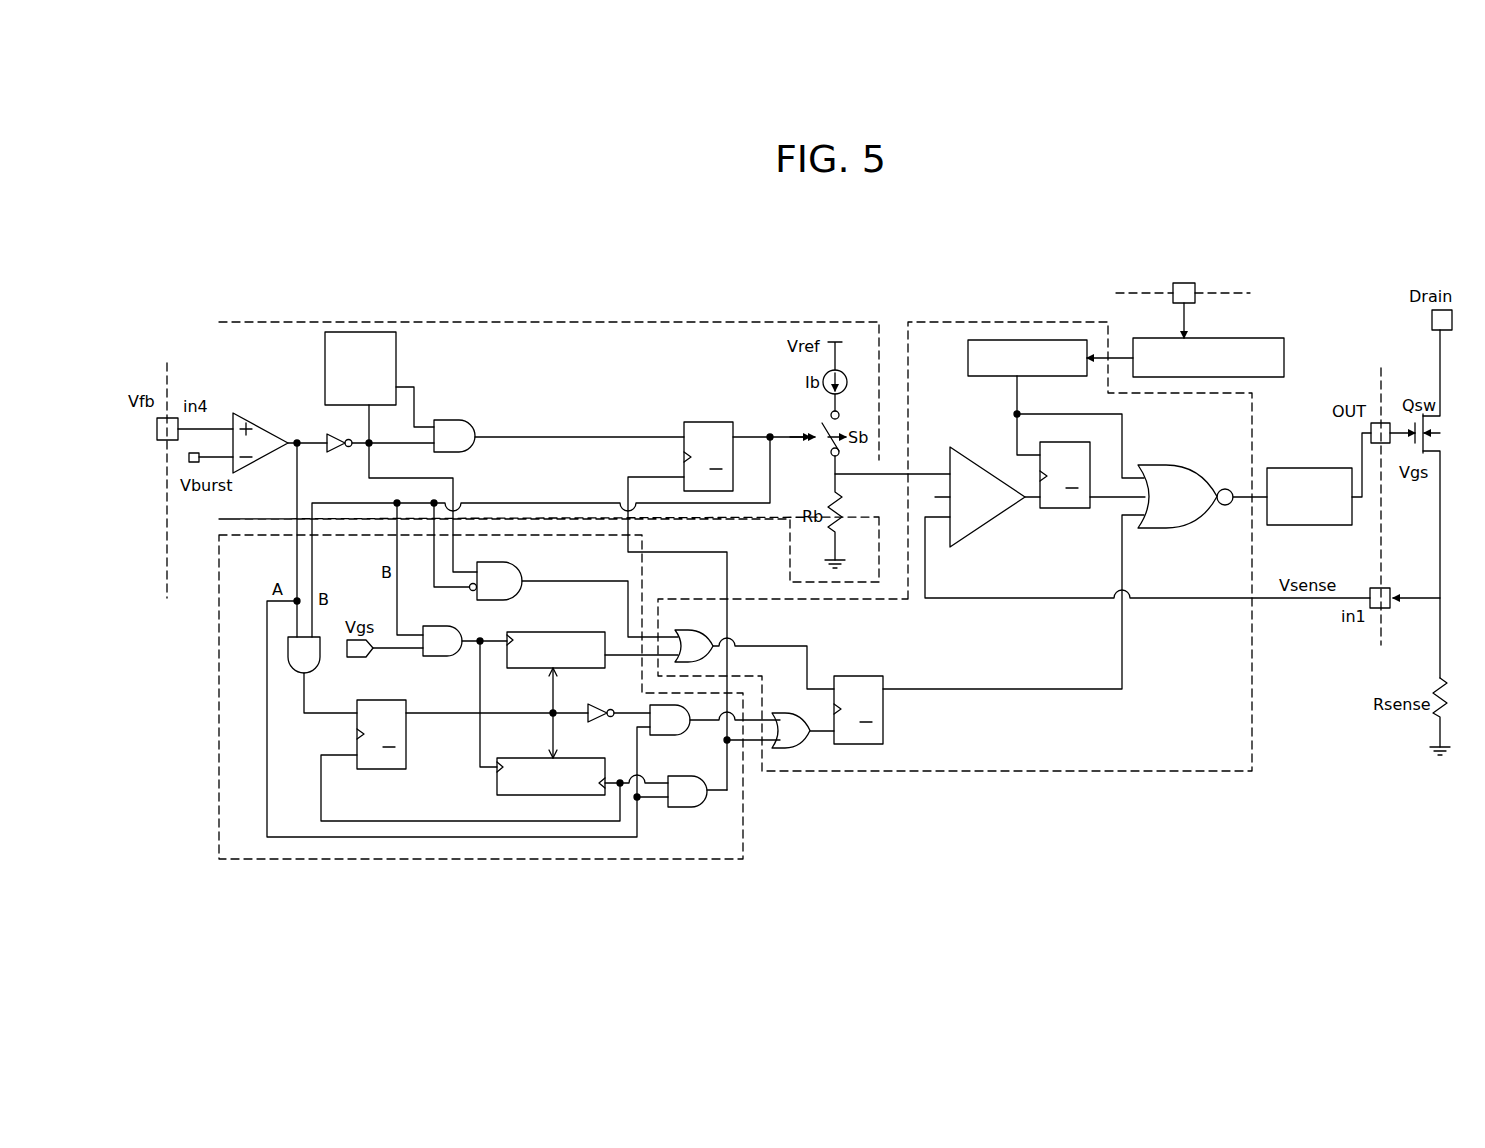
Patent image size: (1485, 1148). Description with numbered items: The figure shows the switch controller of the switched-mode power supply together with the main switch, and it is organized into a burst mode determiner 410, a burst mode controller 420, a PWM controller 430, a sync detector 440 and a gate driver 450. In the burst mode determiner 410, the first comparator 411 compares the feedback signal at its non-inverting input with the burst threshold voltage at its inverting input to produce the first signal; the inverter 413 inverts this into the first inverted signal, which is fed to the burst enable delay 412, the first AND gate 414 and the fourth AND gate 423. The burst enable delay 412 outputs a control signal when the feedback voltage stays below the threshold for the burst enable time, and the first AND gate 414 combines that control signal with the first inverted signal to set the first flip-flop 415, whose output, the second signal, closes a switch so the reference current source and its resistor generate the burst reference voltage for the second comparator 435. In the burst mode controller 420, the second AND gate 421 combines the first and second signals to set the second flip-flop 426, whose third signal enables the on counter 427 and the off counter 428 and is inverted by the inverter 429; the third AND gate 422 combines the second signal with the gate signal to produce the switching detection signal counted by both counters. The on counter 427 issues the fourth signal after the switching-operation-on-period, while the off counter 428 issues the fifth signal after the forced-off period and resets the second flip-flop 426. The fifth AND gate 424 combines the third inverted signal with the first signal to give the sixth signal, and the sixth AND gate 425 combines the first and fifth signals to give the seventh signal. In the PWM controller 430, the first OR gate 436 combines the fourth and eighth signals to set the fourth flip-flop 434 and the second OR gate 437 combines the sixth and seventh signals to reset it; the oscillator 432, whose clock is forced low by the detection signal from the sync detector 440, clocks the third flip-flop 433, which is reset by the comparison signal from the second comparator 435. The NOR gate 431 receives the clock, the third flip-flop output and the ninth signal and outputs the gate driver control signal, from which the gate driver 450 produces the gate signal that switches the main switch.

The burst mode determiner 410 is at (290, 322).
The first comparator 411 is at (258, 413).
The burst enable delay 412 is at (375, 332).
The inverter 413 is at (338, 455).
The first AND gate 414 is at (470, 420).
The first flip-flop 415 is at (707, 422).
The burst mode controller 420 is at (743, 826).
The second AND gate 421 is at (320, 668).
The third AND gate 422 is at (440, 657).
The fourth AND gate 423 is at (522, 566).
The fifth AND gate 424 is at (670, 736).
The sixth AND gate 425 is at (680, 808).
The second flip-flop 426 is at (390, 770).
The on counter 427 is at (577, 632).
The off counter 428 is at (497, 793).
The inverter 429 is at (598, 704).
The PWM controller 430 is at (943, 772).
The NOR gate 431 is at (1183, 465).
The oscillator 432 is at (1000, 340).
The third flip-flop 433 is at (1066, 509).
The fourth flip-flop 434 is at (865, 676).
The second comparator 435 is at (985, 528).
The first OR gate 436 is at (754, 648).
The second OR gate 437 is at (783, 714).
The sync detector 440 is at (1284, 347).
The gate driver 450 is at (1308, 468).